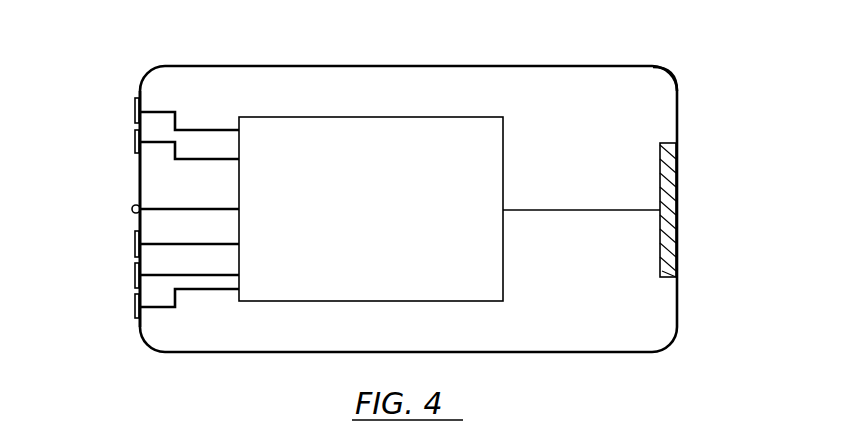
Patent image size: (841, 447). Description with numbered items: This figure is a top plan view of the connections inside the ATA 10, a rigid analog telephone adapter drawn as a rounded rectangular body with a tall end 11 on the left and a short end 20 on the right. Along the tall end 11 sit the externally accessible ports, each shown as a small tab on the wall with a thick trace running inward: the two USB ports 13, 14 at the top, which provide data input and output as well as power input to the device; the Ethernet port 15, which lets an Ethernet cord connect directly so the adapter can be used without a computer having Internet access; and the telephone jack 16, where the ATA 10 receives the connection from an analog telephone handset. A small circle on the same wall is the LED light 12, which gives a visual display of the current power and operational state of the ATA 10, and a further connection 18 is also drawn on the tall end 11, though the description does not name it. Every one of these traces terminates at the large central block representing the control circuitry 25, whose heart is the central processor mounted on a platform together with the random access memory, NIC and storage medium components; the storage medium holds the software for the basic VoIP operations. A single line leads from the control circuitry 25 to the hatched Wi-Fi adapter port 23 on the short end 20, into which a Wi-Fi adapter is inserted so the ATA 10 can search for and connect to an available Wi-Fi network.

The ATA 10 is at (130, 53).
The tall end 11 is at (139, 166).
The LED light 12 is at (132, 207).
The USB port 13 is at (134, 112).
The USB port 14 is at (134, 143).
The Ethernet port 15 is at (134, 273).
The telephone jack 16 is at (134, 305).
The contact pad 18 is at (134, 241).
The short end 20 is at (680, 103).
The Wi-Fi adapter port 23 is at (670, 209).
The control circuitry 25 is at (383, 225).